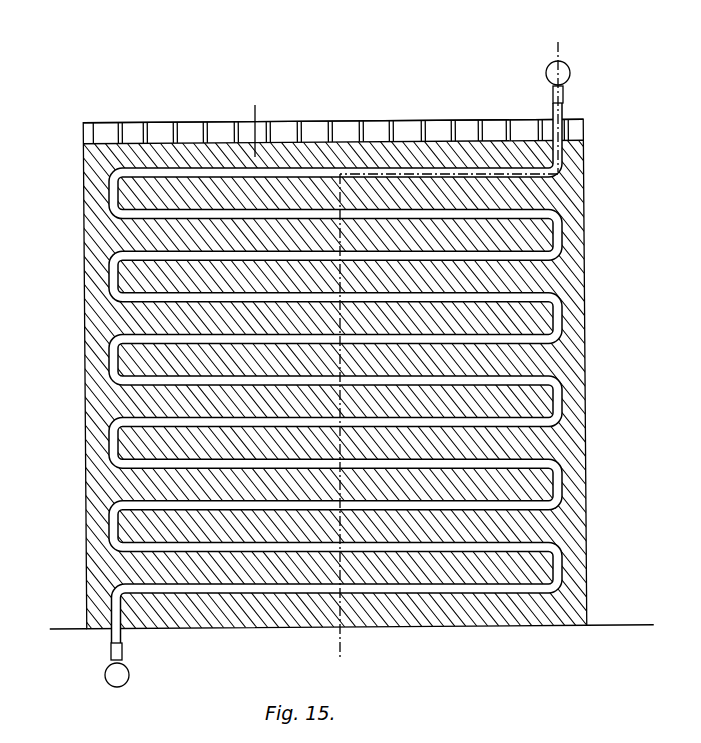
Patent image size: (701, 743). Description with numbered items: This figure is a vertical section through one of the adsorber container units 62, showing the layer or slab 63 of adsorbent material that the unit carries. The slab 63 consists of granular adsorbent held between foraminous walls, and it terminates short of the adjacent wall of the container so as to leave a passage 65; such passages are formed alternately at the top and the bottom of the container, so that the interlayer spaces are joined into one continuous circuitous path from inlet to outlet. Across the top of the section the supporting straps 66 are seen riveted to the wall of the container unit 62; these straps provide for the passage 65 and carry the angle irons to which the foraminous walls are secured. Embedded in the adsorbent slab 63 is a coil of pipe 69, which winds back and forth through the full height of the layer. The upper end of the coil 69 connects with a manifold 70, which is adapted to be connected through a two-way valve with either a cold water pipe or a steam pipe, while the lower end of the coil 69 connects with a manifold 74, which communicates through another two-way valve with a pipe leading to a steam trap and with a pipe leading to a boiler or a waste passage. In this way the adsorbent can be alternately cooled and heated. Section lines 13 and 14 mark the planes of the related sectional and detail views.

The container unit 62 is at (381, 121).
The layer or slab of adsorbent material 63 is at (90, 242).
The passage 65 is at (310, 136).
The supporting strap 66 is at (146, 134).
The coil of pipe 69 is at (563, 313).
The manifold 70 is at (571, 68).
The manifold 74 is at (107, 684).
The section line 13— 13 is at (558, 42).
The section line 14— 14 is at (255, 105).